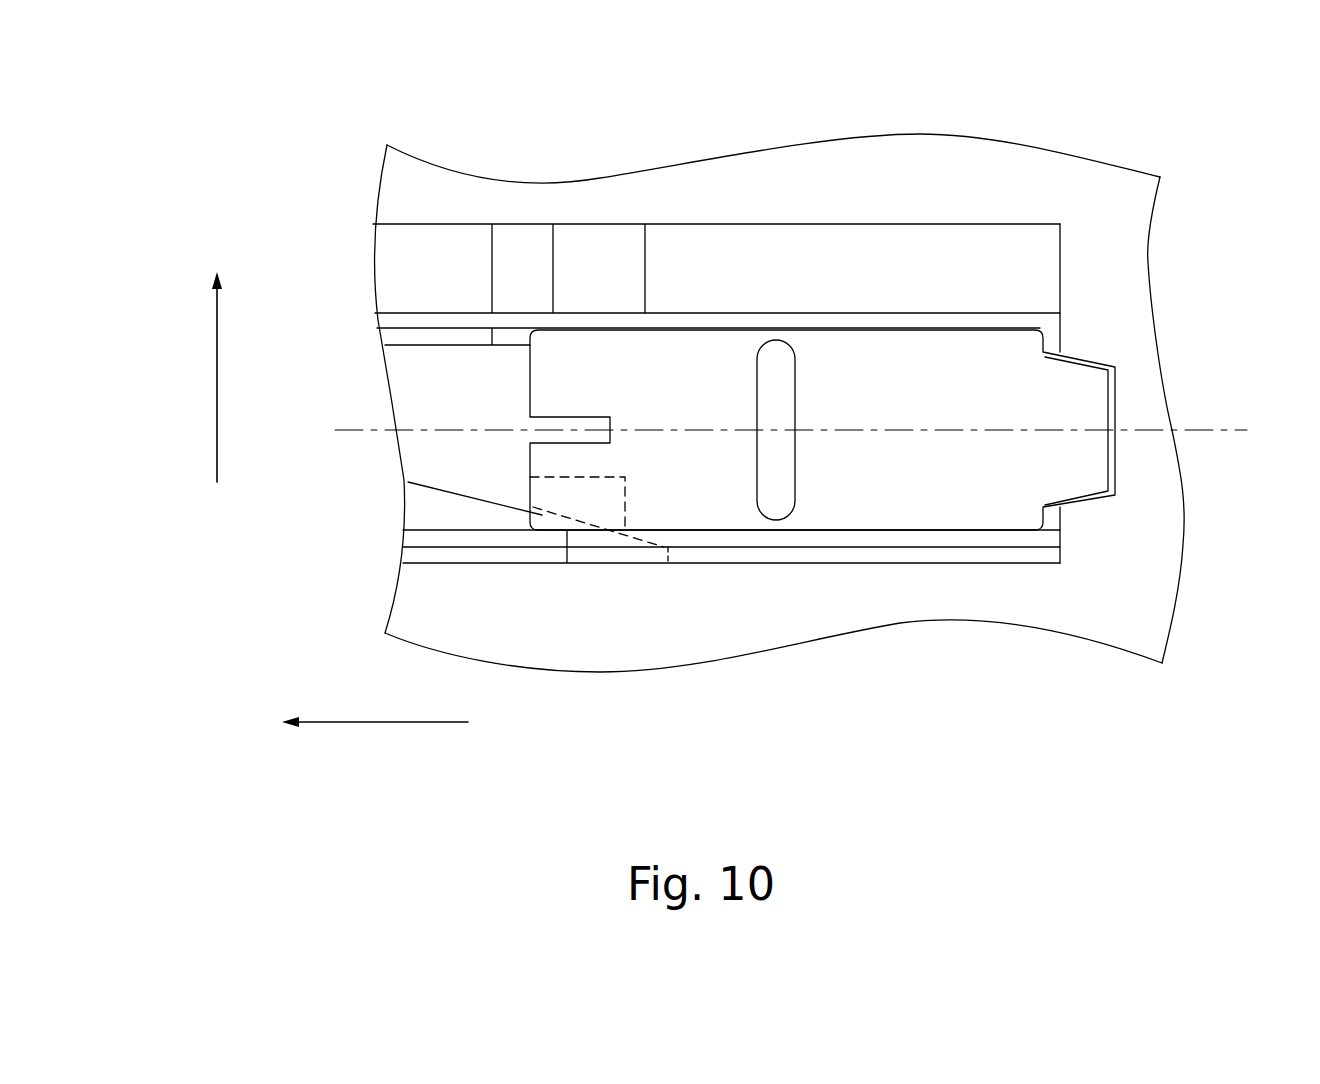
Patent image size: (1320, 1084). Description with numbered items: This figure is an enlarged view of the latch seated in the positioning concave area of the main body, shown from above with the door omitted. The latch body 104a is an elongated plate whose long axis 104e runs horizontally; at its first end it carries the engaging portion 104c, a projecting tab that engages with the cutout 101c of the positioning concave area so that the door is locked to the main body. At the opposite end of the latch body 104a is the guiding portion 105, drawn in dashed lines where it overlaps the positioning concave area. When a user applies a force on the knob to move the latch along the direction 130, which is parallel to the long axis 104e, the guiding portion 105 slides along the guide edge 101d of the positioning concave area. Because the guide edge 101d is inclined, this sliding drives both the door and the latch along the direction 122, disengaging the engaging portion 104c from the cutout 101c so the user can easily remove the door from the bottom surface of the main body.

The cutout 101c is at (1118, 448).
The guide edge 101d is at (450, 487).
The latch body 104a is at (775, 358).
The engaging portion 104c is at (1073, 408).
The long axis 104e is at (983, 432).
The guiding portion 105 is at (612, 497).
The direction 122 is at (215, 378).
The direction 130 is at (373, 725).